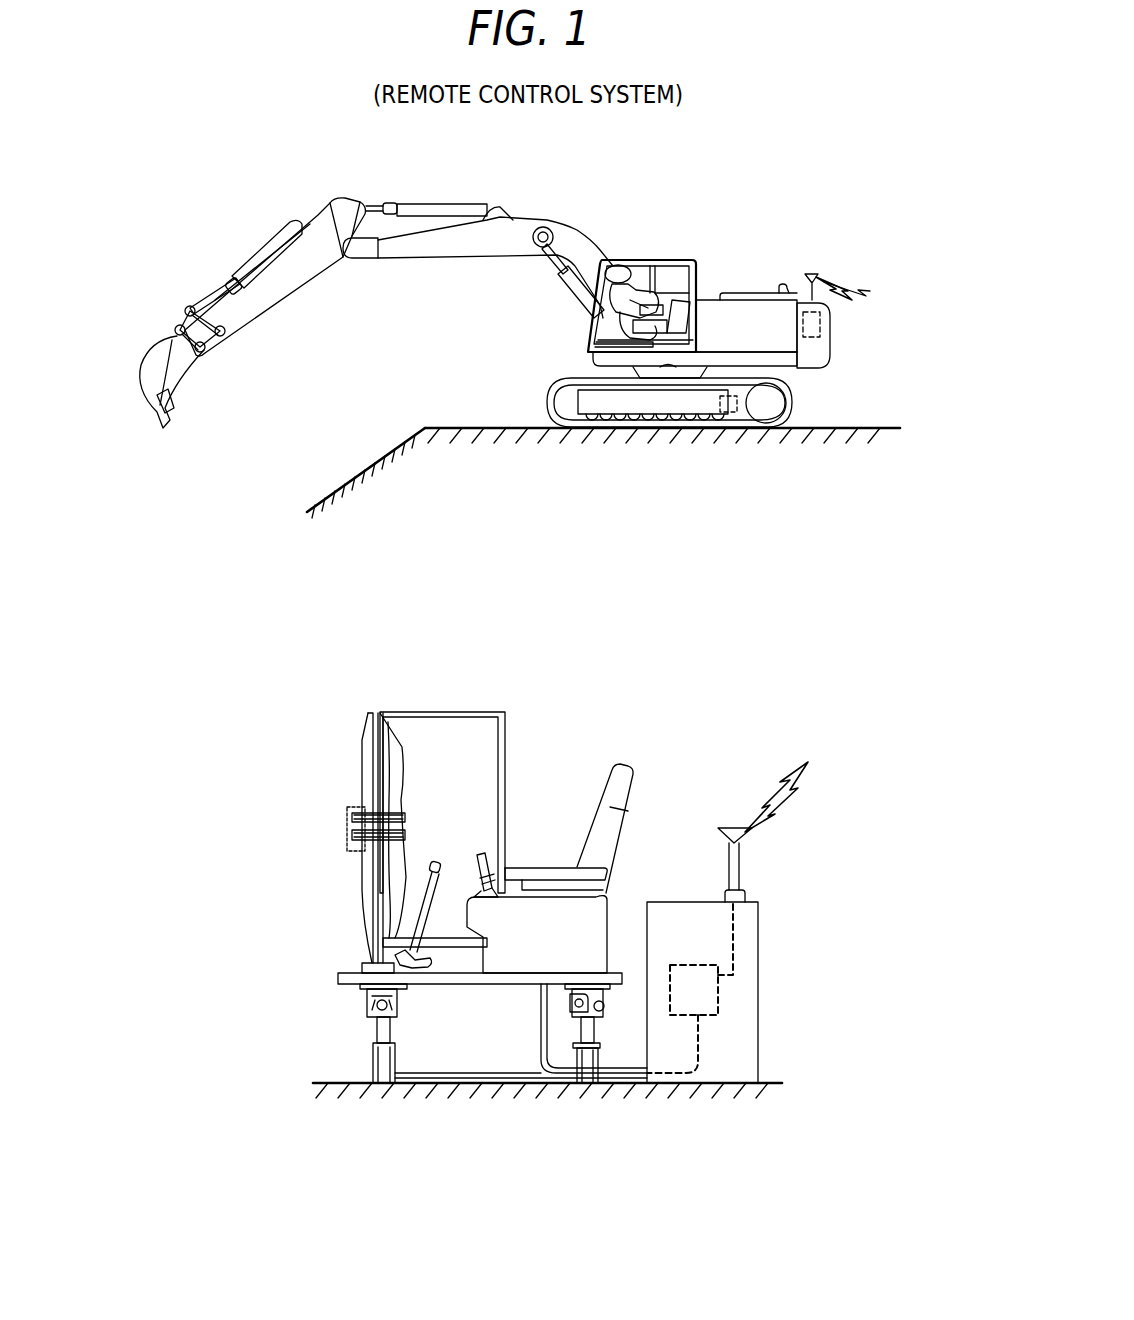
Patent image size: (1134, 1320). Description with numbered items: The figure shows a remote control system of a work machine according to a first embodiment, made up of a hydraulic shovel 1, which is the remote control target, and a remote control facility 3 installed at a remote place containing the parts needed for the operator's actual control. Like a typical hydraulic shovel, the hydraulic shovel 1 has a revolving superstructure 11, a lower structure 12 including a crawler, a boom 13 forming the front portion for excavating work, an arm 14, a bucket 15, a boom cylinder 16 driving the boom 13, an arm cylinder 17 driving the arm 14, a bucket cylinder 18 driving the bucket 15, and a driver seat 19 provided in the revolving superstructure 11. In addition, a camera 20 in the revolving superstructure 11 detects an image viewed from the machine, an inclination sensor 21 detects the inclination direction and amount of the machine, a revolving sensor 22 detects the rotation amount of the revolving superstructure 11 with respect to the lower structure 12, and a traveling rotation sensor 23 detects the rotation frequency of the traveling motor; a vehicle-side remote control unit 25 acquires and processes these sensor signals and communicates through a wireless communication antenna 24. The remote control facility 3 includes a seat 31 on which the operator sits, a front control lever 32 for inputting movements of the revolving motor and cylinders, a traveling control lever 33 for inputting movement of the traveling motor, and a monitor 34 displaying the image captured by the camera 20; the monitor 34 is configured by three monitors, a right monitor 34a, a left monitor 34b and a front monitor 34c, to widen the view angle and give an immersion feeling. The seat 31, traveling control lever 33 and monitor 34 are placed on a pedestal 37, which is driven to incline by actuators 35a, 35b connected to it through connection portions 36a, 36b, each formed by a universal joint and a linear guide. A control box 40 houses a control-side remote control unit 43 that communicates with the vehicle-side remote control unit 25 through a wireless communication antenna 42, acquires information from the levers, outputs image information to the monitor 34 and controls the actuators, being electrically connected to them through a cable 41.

The hydraulic shovel 1 is at (790, 192).
The remote control facility 3 is at (720, 704).
The revolving superstructure 11 is at (836, 352).
The lower structure 12 is at (796, 402).
The boom 13 is at (578, 226).
The arm 14 is at (330, 205).
The bucket 15 is at (162, 345).
The boom cylinder 16 is at (563, 270).
The arm cylinder 17 is at (418, 206).
The bucket cylinder 18 is at (252, 268).
The driver seat 19 is at (697, 277).
The camera 20 is at (628, 267).
The inclination sensor 21 is at (593, 337).
The revolving sensor 22 is at (664, 380).
The traveling rotation sensor 23 is at (731, 414).
The wireless communication antenna 24 is at (812, 273).
The vehicle-side remote control unit 25 is at (826, 325).
The seat 31 is at (620, 766).
The front control lever 32 is at (497, 856).
The traveling control lever 33 is at (437, 858).
The monitor 34 is at (262, 648).
The right monitor 34a is at (420, 712).
The left monitor 34b is at (390, 714).
The front monitor 34c is at (362, 744).
The actuator 35a is at (372, 1068).
The actuator 35b is at (600, 1080).
The connection portion 36a is at (367, 1000).
The connection portion 36b is at (570, 1000).
The pedestal 37 is at (450, 986).
The control box 40 is at (760, 985).
The cable 41 is at (540, 1042).
The wireless communication antenna 42 is at (745, 865).
The control-side remote control unit 43 is at (720, 1010).